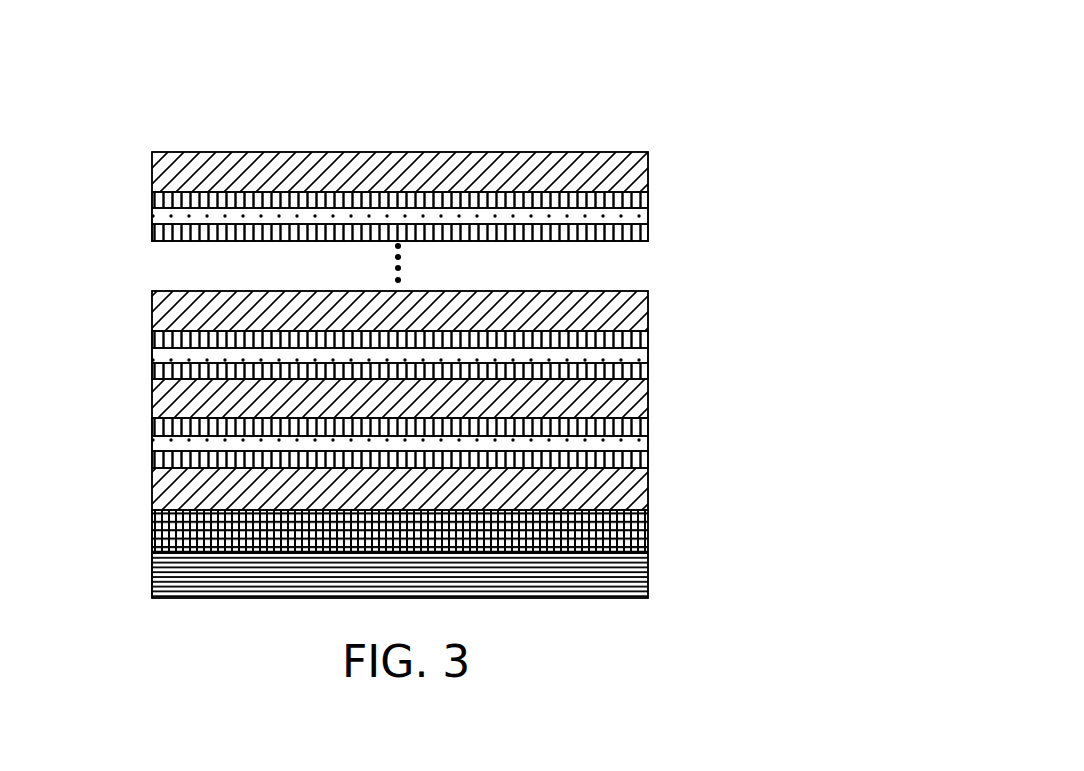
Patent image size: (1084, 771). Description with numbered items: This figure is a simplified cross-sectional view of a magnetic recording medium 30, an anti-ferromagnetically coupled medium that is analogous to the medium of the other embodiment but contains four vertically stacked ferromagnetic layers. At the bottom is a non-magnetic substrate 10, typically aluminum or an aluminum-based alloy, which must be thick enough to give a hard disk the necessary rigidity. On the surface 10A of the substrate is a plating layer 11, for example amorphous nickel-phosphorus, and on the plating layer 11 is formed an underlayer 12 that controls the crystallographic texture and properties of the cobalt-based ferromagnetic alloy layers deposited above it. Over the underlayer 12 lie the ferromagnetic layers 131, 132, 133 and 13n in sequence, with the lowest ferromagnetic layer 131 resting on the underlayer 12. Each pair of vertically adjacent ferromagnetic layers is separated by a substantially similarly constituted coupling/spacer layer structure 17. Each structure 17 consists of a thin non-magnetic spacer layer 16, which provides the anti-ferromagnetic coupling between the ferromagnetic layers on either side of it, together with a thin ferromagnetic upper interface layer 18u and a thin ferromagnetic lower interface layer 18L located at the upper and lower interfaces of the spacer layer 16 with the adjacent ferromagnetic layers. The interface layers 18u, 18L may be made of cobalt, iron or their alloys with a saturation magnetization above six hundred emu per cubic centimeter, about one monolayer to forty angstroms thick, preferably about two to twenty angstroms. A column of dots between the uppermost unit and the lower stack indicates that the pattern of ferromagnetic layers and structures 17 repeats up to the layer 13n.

The magnetic recording medium 30 is at (137, 126).
The ferromagnetic layer 13n is at (666, 162).
The ferromagnetic layer 133 is at (666, 300).
The ferromagnetic layer 132 is at (666, 395).
The ferromagnetic layer 131 is at (666, 481).
The upper ferromagnetic interface layer 18u is at (666, 193).
The lower ferromagnetic interface layer 18L is at (666, 228).
The non-magnetic spacer layer 16 is at (666, 211).
The coupling/spacer layer structure 17 is at (823, 178).
The underlayer 12 is at (666, 521).
The plating layer 11 is at (658, 542).
The non-magnetic substrate 10 is at (670, 569).
The substrate surface 10A is at (140, 553).